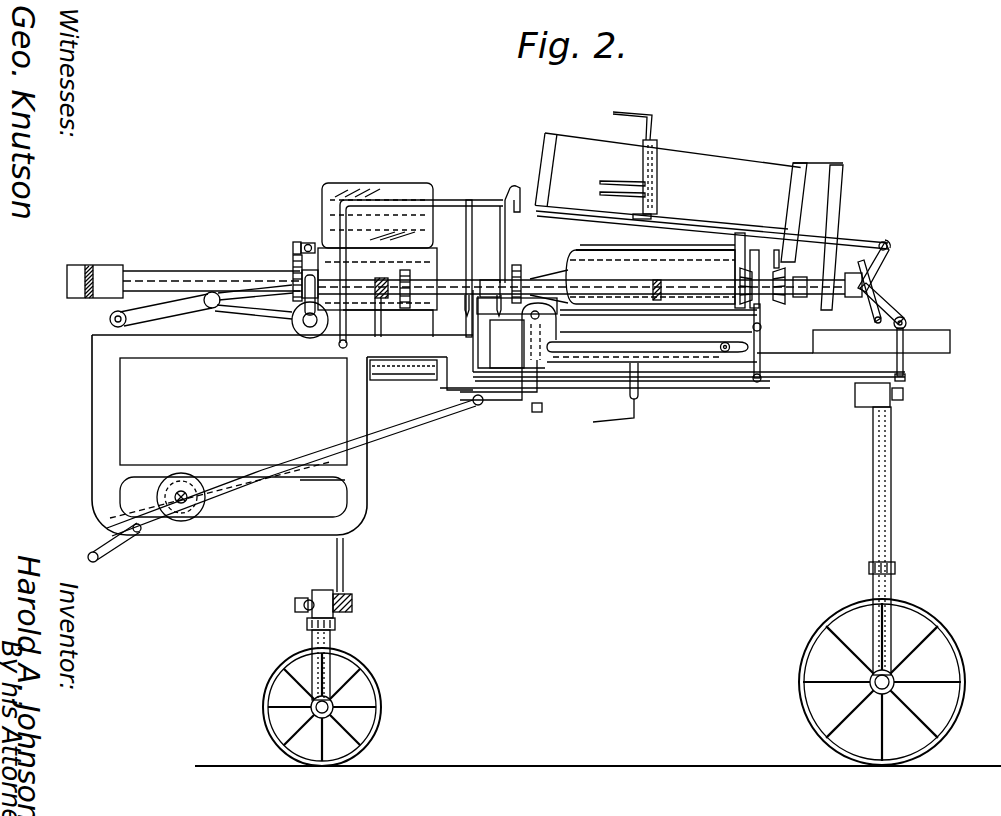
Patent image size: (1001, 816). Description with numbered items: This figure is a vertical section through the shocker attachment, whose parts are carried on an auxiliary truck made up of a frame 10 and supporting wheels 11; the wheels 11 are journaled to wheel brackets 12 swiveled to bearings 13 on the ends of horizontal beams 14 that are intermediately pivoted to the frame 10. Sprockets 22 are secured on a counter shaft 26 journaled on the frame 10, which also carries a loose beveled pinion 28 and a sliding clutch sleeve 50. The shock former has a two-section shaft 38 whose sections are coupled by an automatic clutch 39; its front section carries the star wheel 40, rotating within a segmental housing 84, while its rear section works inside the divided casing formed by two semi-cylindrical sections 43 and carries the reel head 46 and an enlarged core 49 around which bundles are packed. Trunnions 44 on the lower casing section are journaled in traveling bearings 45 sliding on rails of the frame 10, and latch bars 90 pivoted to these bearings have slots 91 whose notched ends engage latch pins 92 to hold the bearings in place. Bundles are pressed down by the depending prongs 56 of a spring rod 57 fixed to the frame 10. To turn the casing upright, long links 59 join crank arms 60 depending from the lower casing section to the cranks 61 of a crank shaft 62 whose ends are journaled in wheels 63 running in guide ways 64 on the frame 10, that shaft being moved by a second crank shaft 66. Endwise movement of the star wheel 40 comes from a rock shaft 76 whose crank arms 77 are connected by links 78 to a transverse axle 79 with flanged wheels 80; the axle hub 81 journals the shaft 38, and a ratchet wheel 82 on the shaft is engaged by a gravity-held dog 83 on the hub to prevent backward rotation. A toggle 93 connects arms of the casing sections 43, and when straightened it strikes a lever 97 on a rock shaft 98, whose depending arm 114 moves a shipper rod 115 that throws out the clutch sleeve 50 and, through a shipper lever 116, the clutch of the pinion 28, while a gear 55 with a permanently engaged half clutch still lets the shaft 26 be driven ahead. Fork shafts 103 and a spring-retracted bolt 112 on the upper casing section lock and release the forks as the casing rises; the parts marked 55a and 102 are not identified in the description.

The frame 10 is at (117, 407).
The supporting wheels 11 is at (263, 706).
The wheel brackets 12 is at (330, 662).
The bearings 13 is at (338, 622).
The horizontal beams 14 is at (345, 585).
The sprockets 22 is at (408, 270).
The counter shaft 26 is at (553, 272).
The beveled pinion 28 is at (740, 282).
The shaft 38 is at (175, 270).
The automatic clutch 39 is at (541, 270).
The star wheel 40 is at (418, 184).
The casing sections 43 is at (752, 167).
The trunnions 44 is at (533, 320).
The traveling bearings 45 is at (559, 360).
The disk-like head 46 is at (737, 250).
The core 49 is at (668, 257).
The clutch sleeve 50 is at (490, 300).
The gear 55 is at (776, 268).
The guide plate 55a is at (800, 245).
The depending prongs 56 is at (472, 255).
The spring rod 57 is at (352, 207).
The long links 59 is at (395, 425).
The crank arms 60 is at (518, 400).
The cranks 61 is at (140, 505).
The crank shaft 62 is at (188, 498).
The wheels 63 is at (182, 522).
The guide ways 64 is at (322, 492).
The second crank shaft 66 is at (138, 533).
The rock shaft 76 is at (110, 324).
The crank arms 77 is at (182, 306).
The links 78 is at (290, 297).
The transverse axle 79 is at (310, 287).
The flanged wheels 80 is at (307, 338).
The hub 81 is at (292, 258).
The ratchet wheel 82 is at (292, 300).
The gravity-held dog 83 is at (305, 241).
The segmental housing 84 is at (405, 378).
The latch bars 90 is at (697, 362).
The slots 91 is at (612, 352).
The latch pins 92 is at (723, 353).
The toggle 93 is at (873, 264).
The lever 97 is at (893, 300).
The rock shaft 98 is at (907, 321).
The wire guides 102 is at (660, 118).
The fork shafts 103 is at (664, 150).
The spring retracted bolt 112 is at (516, 186).
The depending arm 114 is at (905, 366).
The shipper rod 115 is at (510, 378).
The shipper lever 116 is at (760, 388).